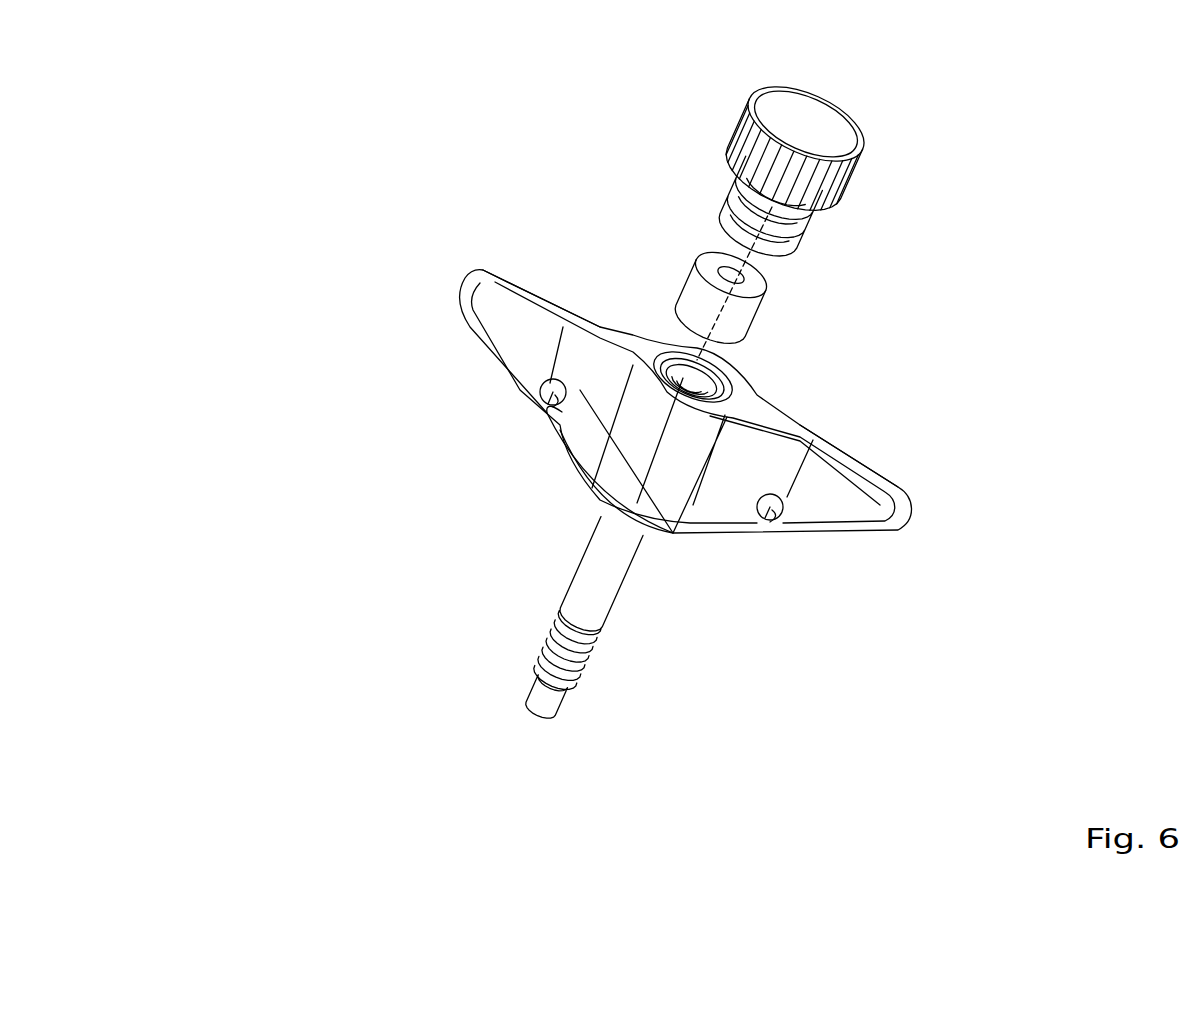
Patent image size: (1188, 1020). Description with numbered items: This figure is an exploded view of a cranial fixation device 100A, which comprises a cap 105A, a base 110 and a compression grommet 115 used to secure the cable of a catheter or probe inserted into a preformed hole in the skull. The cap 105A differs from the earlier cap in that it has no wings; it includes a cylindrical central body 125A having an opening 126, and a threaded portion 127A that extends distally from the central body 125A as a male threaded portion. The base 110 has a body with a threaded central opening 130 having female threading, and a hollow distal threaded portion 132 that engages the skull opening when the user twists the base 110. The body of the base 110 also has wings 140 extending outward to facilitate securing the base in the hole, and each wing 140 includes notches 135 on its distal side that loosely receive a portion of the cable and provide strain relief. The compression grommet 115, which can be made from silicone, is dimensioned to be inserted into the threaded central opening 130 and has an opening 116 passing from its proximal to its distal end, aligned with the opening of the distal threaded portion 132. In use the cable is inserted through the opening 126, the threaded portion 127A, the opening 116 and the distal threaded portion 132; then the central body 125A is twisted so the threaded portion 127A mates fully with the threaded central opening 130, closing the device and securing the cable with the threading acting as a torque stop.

The cranial fixation device 100A is at (440, 292).
The cap 105A is at (862, 183).
The central body 125A is at (730, 135).
The opening 126 is at (803, 138).
The threaded portion 127A is at (800, 232).
The compression grommet 115 is at (742, 320).
The opening 116 is at (740, 274).
The base 110 is at (487, 385).
The threaded central opening 130 is at (677, 370).
The notches 135 is at (565, 400).
The wings 140 is at (730, 510).
The distal threaded portion 132 is at (550, 640).